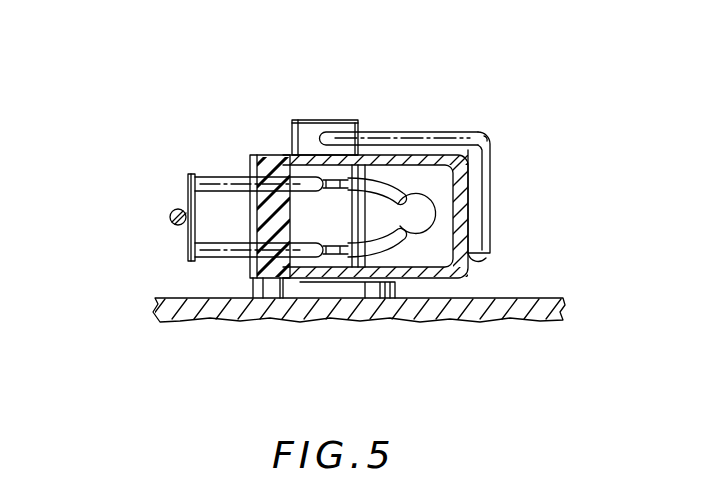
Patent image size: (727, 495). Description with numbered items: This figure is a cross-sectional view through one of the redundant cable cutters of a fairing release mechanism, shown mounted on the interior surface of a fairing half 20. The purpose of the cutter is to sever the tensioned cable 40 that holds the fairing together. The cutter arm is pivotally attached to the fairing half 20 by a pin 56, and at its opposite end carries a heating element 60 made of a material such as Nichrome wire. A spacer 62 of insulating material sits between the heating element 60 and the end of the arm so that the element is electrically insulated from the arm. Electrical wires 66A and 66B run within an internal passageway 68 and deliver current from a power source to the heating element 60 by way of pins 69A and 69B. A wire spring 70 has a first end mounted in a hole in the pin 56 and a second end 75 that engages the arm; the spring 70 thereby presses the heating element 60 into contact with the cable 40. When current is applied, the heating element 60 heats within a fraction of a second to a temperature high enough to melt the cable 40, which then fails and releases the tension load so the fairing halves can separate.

The fairing half 20 is at (165, 298).
The cable 40 is at (170, 217).
The pin 56 is at (322, 120).
The heating element 60 is at (188, 202).
The spacer 62 is at (268, 156).
The electrical wire 66A is at (380, 177).
The electrical wire 66B is at (400, 236).
The internal passageway 68 is at (443, 170).
The pin 69A is at (218, 175).
The pin 69B is at (232, 258).
The wire spring 70 is at (488, 182).
The second end 75 is at (481, 254).